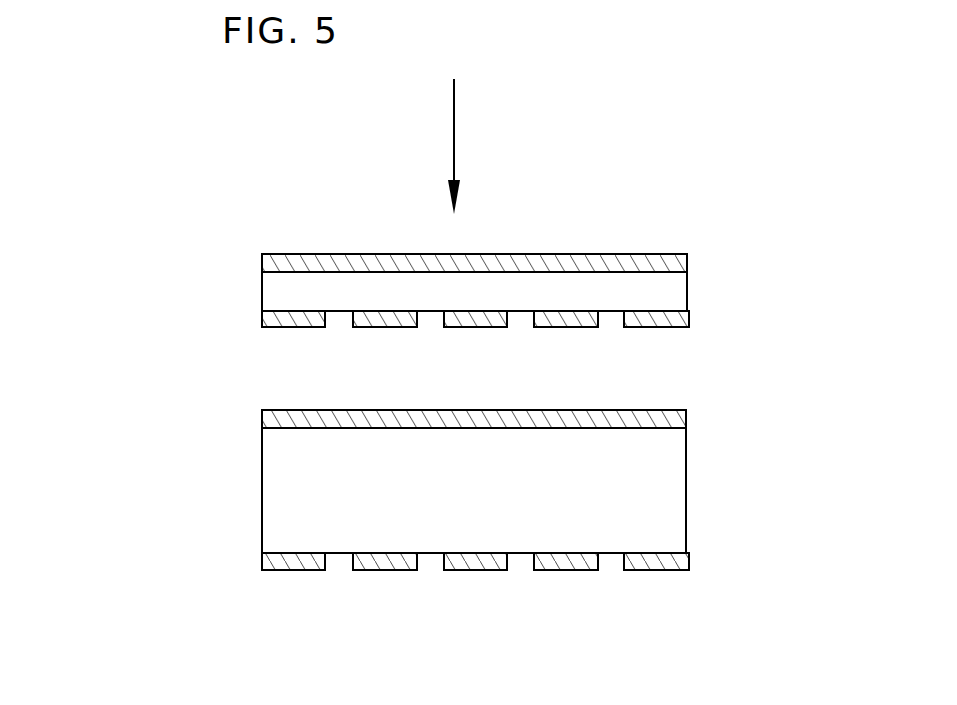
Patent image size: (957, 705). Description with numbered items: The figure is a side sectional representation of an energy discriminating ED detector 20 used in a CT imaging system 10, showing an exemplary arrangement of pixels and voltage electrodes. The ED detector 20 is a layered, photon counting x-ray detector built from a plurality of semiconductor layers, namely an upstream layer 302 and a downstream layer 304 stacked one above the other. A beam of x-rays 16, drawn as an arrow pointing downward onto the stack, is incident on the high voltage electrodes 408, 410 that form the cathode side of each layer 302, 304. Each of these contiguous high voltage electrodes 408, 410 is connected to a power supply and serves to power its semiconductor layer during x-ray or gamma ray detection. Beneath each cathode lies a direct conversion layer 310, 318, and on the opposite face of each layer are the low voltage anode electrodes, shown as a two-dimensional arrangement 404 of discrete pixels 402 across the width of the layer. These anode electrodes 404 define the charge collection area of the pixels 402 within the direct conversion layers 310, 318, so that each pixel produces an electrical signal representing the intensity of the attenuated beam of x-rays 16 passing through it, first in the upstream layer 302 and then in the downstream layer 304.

The CT imaging system 10 is at (630, 110).
The beam of x-rays 16 is at (455, 137).
The ED detector 20 is at (257, 597).
The upstream layer 302 is at (712, 282).
The downstream layer 304 is at (710, 499).
The direct conversion layer 310 is at (270, 290).
The direct conversion layer 318 is at (280, 488).
The pixels 402 is at (272, 561).
The anode electrodes 404 is at (273, 323).
The high voltage electrode 408 is at (275, 258).
The high voltage electrode 410 is at (275, 420).